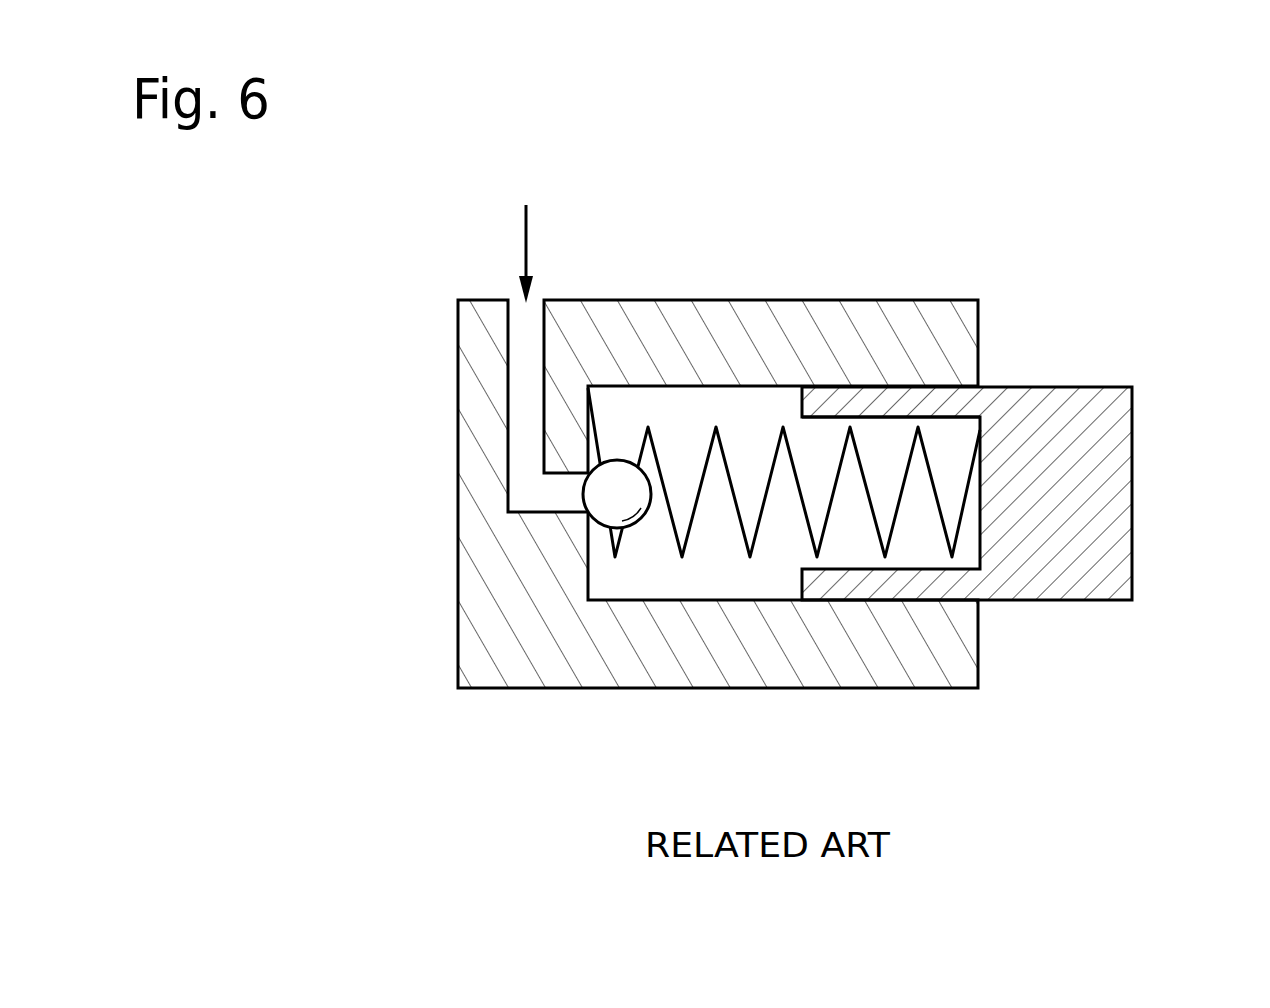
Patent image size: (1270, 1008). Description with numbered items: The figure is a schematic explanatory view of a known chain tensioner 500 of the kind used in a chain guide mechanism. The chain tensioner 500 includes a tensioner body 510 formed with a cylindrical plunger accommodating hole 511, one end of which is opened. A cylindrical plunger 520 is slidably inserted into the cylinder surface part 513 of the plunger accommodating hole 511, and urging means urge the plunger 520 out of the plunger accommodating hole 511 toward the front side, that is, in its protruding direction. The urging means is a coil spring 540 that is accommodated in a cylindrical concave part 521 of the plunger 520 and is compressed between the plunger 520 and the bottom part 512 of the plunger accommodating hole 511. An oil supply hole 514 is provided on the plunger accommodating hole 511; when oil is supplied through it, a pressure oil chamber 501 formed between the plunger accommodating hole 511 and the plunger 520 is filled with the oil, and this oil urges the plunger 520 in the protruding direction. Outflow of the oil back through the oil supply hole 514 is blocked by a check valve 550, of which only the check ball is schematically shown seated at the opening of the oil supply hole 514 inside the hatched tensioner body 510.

The chain tensioner 500 is at (1110, 198).
The pressure oil chamber 501 is at (715, 535).
The tensioner body 510 is at (630, 653).
The plunger accommodating hole 511 is at (787, 208).
The bottom part 512 is at (590, 418).
The cylinder surface part 513 is at (777, 387).
The oil supply hole 514 is at (528, 232).
The plunger 520 is at (1110, 530).
The cylindrical concave part 521 is at (907, 427).
The coil spring 540 is at (895, 510).
The check valve 550 is at (583, 492).